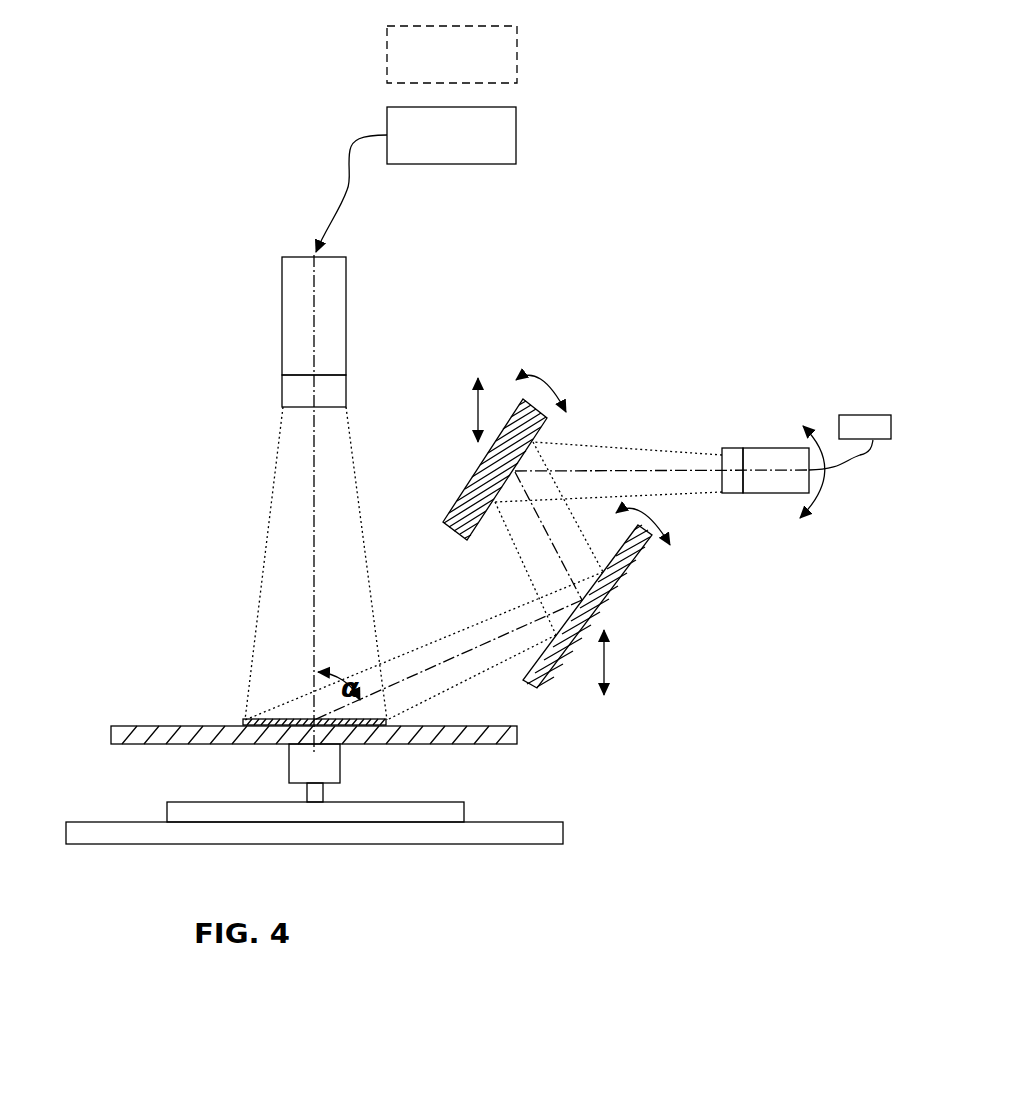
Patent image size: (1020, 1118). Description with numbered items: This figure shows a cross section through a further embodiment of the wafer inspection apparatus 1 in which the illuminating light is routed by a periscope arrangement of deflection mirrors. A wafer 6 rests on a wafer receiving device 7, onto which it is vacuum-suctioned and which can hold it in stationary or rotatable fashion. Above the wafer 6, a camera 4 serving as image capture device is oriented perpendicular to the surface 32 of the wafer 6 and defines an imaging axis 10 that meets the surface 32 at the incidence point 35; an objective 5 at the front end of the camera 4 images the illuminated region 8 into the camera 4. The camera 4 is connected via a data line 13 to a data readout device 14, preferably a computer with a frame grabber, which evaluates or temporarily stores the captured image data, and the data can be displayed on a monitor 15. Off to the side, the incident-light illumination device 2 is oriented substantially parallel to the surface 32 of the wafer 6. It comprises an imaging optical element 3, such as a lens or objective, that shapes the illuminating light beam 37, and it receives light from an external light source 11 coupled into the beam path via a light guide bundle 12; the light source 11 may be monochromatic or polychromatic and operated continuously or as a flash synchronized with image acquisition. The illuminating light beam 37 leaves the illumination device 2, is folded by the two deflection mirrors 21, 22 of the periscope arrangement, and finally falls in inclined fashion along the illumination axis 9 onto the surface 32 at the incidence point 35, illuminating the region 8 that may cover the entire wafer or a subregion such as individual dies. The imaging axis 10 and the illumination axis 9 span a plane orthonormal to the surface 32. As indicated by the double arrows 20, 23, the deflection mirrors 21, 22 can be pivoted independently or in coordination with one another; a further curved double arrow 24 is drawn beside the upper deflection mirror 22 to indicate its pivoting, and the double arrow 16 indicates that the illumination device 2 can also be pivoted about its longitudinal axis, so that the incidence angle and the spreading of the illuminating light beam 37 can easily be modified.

The wafer inspection apparatus 1 is at (184, 336).
The incident-light illumination device 2 is at (770, 448).
The imaging optical element 3 is at (730, 448).
The camera 4 is at (335, 313).
The objective 5 is at (335, 393).
The wafer 6 is at (517, 736).
The wafer receiving device 7 is at (330, 763).
The illuminated region 8 is at (250, 717).
The illumination axis 9 is at (455, 652).
The imaging axis 10 is at (317, 472).
The light source 11 is at (867, 420).
The light guide bundle 12 is at (872, 468).
The data line 13 is at (350, 183).
The data readout device 14 is at (516, 135).
The monitor 15 is at (517, 52).
The double arrow 16 is at (822, 505).
The double arrow 20 is at (477, 412).
The deflection mirror 21 is at (606, 590).
The deflection mirror 22 is at (448, 520).
The double arrow 23 is at (664, 518).
The rotation of first mirror 24 is at (553, 372).
The surface 32 is at (144, 720).
The incidence point 35 is at (308, 717).
The illuminating light beam 37 is at (453, 690).